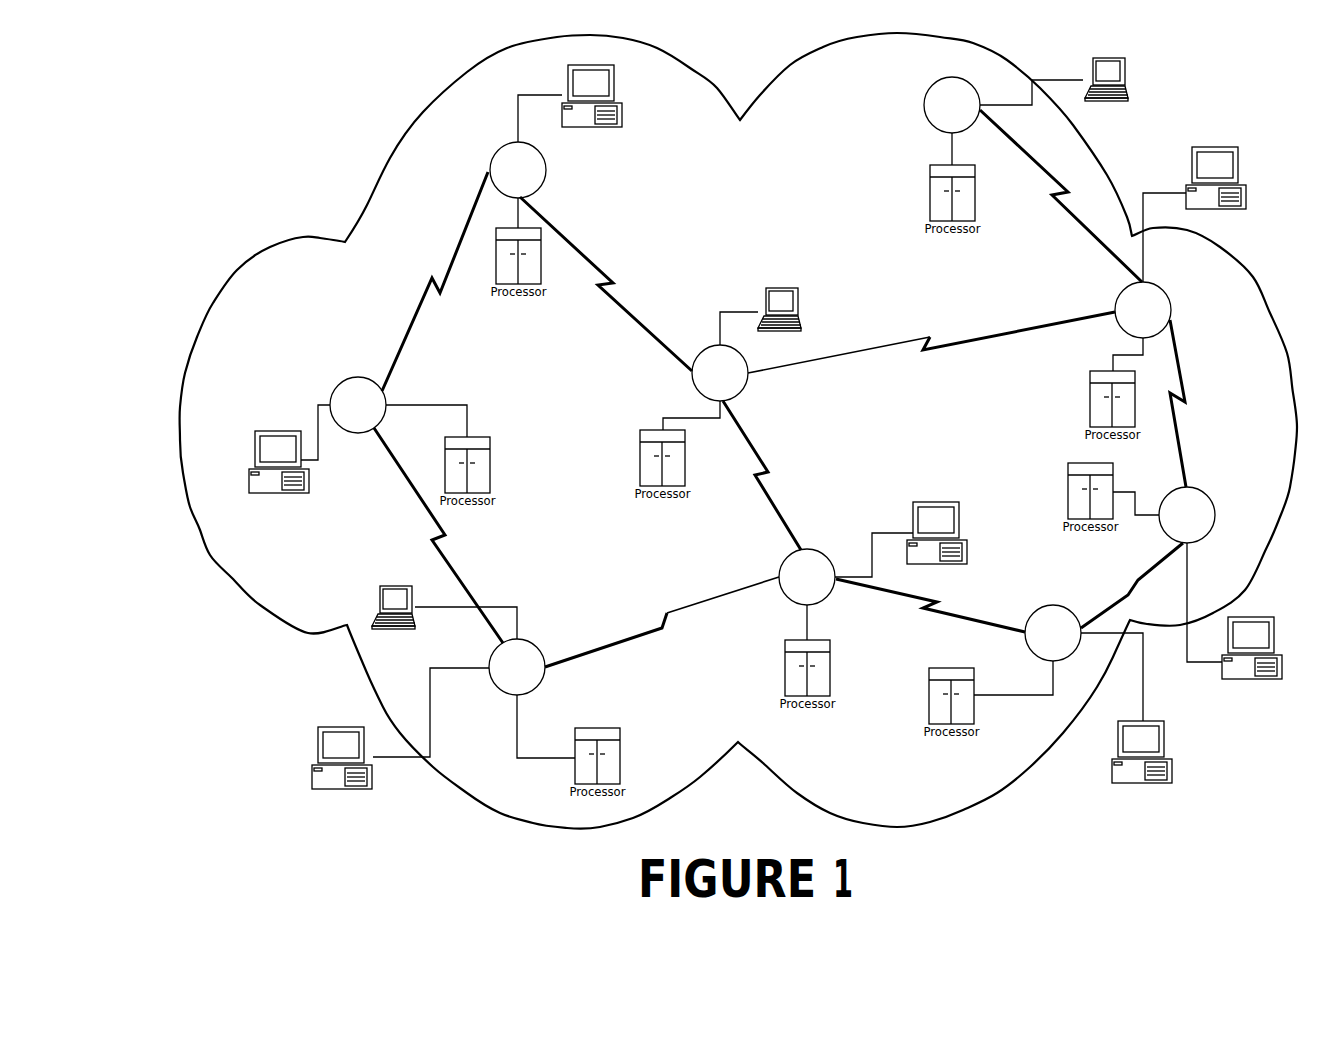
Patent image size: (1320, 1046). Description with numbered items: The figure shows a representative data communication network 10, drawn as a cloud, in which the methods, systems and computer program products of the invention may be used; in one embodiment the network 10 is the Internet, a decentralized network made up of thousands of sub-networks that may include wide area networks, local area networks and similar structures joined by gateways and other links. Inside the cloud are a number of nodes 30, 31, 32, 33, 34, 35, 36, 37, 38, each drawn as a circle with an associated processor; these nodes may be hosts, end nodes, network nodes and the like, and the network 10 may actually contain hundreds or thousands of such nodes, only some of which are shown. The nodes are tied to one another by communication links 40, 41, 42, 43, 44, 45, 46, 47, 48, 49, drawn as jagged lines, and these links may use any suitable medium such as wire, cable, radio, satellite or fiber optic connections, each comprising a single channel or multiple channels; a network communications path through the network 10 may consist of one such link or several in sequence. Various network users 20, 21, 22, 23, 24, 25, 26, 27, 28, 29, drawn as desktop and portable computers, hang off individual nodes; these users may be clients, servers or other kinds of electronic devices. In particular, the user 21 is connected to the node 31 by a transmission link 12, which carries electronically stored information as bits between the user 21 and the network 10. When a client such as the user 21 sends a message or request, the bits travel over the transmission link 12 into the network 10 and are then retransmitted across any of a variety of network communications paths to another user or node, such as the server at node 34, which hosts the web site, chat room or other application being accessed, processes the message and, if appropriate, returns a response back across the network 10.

The data communication network 10 is at (725, 203).
The transmission link 12 is at (438, 723).
The user 20 is at (1130, 808).
The user 21 is at (330, 816).
The user 22 is at (381, 659).
The user 23 is at (268, 521).
The user 24 is at (578, 154).
The user 25 is at (766, 361).
The user 26 is at (1093, 131).
The user 27 is at (1205, 236).
The user 28 is at (925, 591).
The user 29 is at (1240, 706).
The node 30 is at (346, 416).
The node 31 is at (505, 678).
The node 32 is at (506, 181).
The node 33 is at (708, 384).
The node 34 is at (795, 588).
The node 35 is at (1131, 321).
The node 36 is at (1041, 644).
The node 37 is at (1175, 526).
The node 38 is at (940, 116).
The communication link 40 is at (433, 326).
The communication link 41 is at (415, 574).
The communication link 42 is at (651, 658).
The communication link 43 is at (589, 336).
The communication link 44 is at (785, 499).
The communication link 45 is at (940, 334).
The communication link 46 is at (908, 641).
The communication link 47 is at (1148, 463).
The communication link 48 is at (1103, 576).
The communication link 49 is at (1038, 238).